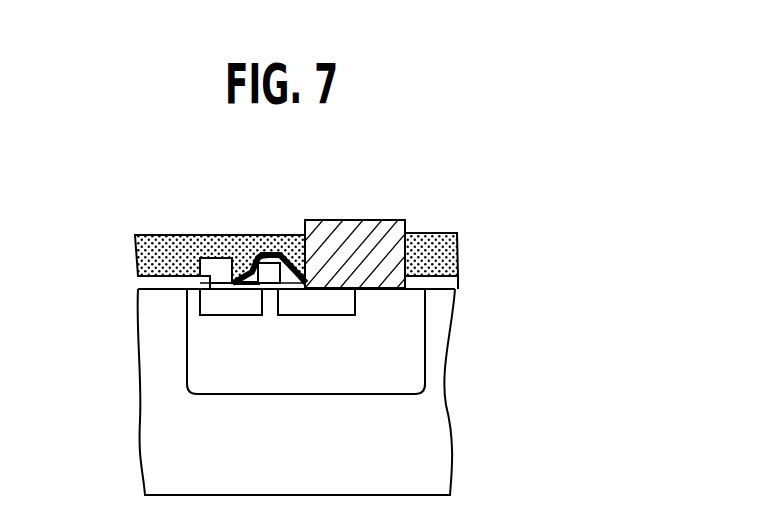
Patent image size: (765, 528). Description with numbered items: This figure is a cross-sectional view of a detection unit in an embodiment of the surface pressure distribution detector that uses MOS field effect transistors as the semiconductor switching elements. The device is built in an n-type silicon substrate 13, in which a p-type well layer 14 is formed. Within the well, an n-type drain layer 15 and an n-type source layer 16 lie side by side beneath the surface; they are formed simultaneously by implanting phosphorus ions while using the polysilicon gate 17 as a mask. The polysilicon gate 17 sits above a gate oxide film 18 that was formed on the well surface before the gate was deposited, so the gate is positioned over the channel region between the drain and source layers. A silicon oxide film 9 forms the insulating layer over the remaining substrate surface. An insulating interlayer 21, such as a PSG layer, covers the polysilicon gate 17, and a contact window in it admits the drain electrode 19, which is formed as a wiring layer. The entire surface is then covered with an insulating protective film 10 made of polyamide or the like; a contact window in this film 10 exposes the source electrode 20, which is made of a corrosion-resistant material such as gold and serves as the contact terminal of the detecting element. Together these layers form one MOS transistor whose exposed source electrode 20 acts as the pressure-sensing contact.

The silicon oxide film 9 is at (443, 282).
The insulating protective film 10 is at (448, 235).
The n-type silicon substrate 13 is at (296, 392).
The p-type well layer 14 is at (306, 341).
The n-type drain layer 15 is at (218, 303).
The n-type source layer 16 is at (347, 305).
The polysilicon gate 17 is at (268, 272).
The gate oxide film 18 is at (293, 267).
The drain electrode 19 is at (217, 268).
The source electrode 20 is at (375, 230).
The insulating interlayer 21 is at (252, 252).